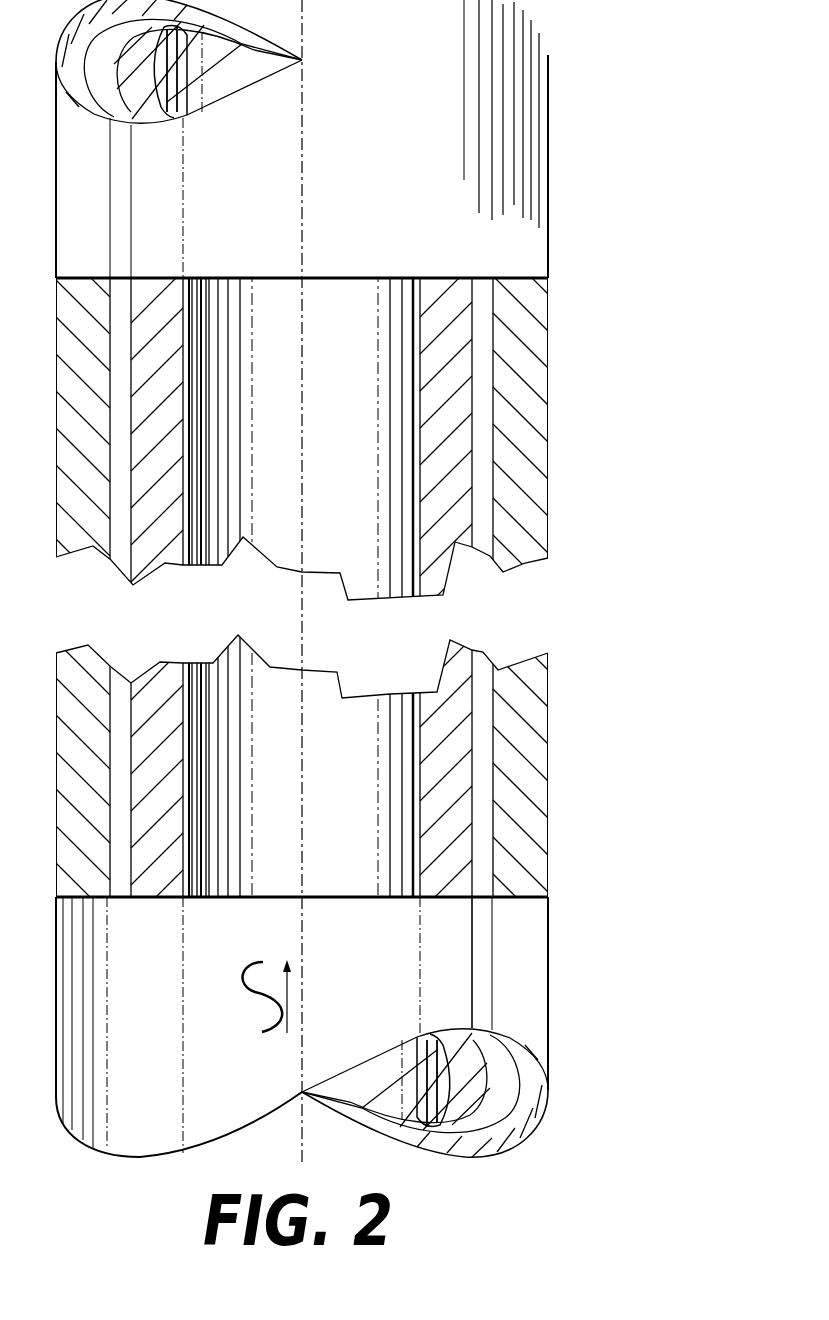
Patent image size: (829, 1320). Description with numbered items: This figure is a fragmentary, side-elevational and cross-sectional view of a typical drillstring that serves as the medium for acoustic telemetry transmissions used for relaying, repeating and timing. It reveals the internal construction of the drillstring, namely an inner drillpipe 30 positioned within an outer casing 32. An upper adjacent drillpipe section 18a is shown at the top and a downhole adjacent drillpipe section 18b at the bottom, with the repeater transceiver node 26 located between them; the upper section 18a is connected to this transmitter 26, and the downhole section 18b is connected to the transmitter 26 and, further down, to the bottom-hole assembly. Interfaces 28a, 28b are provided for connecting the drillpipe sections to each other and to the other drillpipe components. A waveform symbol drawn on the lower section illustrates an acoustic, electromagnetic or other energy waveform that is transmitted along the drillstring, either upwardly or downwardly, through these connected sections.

The upper adjacent drillpipe section 18a is at (548, 112).
The downhole adjacent drillpipe section 18b is at (548, 962).
The repeater transceiver node 26 is at (556, 273).
The interface 28a is at (270, 277).
The interface 28b is at (355, 899).
The inner drillpipe 30 is at (450, 277).
The outer casing 32 is at (519, 277).